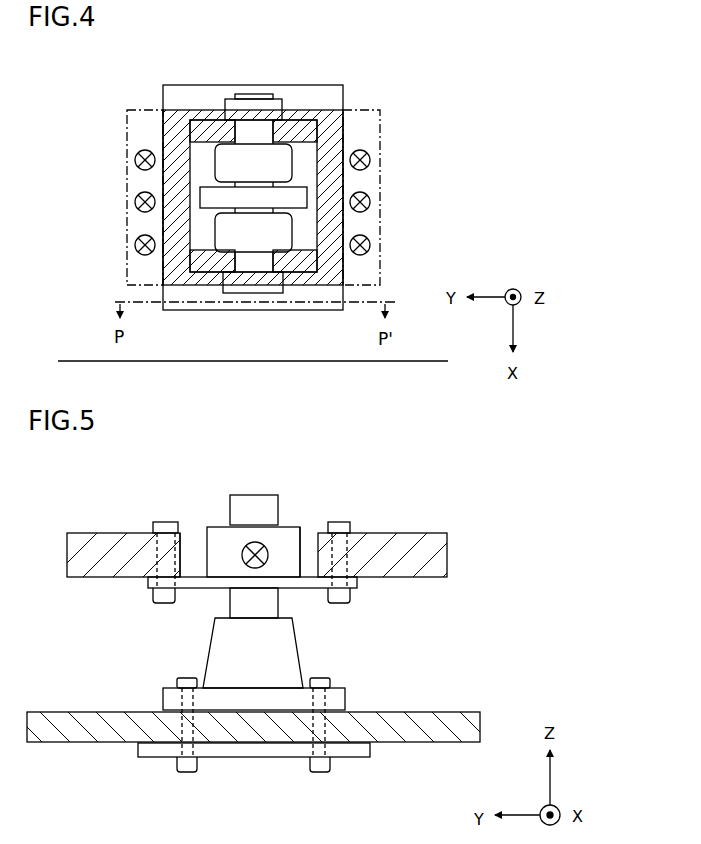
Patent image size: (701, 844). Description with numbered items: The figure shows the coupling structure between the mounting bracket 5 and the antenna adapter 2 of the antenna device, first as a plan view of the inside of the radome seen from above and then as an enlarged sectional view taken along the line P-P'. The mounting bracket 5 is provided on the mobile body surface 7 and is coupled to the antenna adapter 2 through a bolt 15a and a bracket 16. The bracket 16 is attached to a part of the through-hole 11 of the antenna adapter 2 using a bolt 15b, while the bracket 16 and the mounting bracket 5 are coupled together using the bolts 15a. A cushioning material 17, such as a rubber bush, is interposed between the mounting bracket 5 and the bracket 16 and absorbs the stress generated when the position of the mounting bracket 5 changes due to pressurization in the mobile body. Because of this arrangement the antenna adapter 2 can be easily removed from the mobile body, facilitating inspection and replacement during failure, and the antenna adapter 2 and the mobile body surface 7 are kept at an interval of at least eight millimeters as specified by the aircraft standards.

In FIG. 5, the antenna adapter 2 is at (257, 527).
In FIG. 4, the mounting bracket 5 is at (300, 198).
In FIG. 5, the mounting bracket 5 is at (255, 567).
In FIG. 5, the mobile body surface 7 is at (253, 699).
In FIG. 4, the through-hole 11 is at (244, 179).
In FIG. 5, the through-hole 11 is at (226, 517).
In FIG. 4, the bolt 15a is at (268, 288).
In FIG. 5, the bolt 15a is at (224, 525).
In FIG. 4, the bolt 15b is at (221, 181).
In FIG. 5, the bolt 15b is at (229, 543).
In FIG. 4, the bracket 16 is at (127, 245).
In FIG. 5, the bracket 16 is at (270, 527).
In FIG. 4, the cushioning material 17 is at (288, 160).